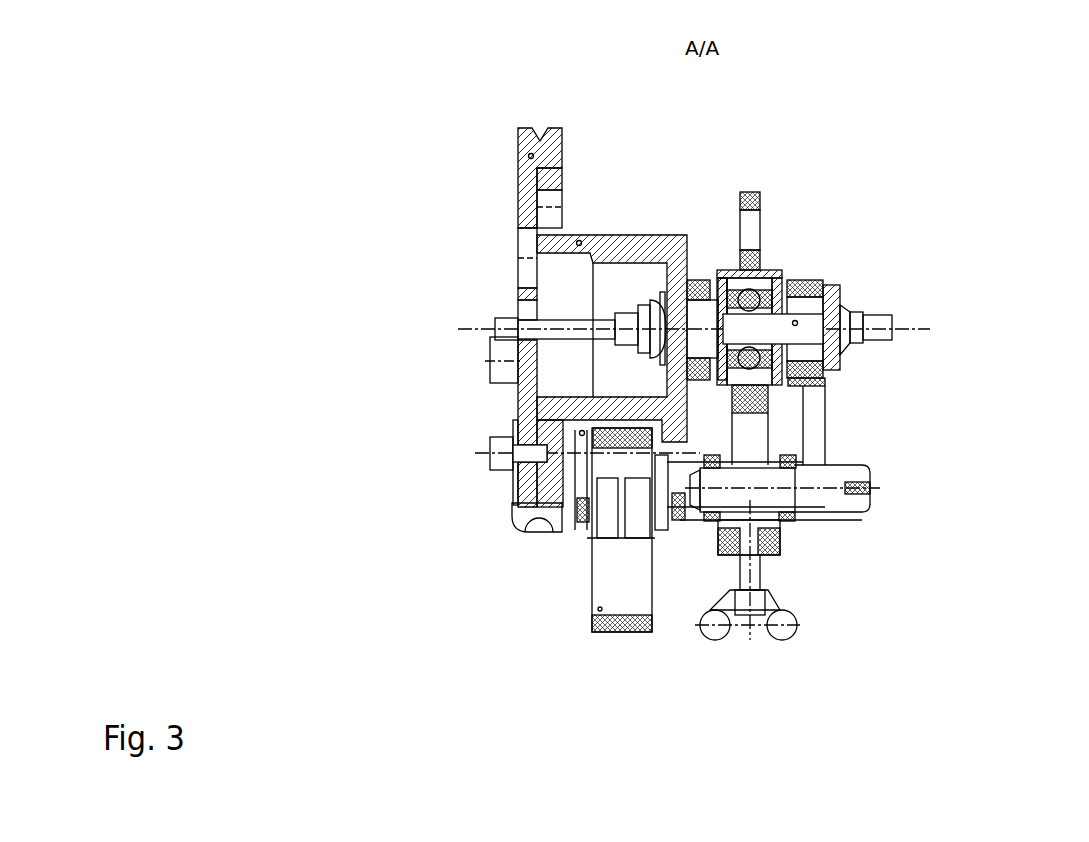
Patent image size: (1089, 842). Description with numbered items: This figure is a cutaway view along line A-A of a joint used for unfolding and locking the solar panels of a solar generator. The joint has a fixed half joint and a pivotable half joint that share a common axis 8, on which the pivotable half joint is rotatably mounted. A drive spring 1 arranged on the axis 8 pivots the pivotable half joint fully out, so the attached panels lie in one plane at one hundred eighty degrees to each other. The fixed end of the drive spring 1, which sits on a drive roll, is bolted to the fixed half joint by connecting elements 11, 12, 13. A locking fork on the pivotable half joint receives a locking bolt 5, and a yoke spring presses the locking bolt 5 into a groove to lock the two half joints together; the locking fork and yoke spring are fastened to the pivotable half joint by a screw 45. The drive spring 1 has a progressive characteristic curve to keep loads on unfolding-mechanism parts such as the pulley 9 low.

The drive spring 1 is at (608, 632).
The locking bolt 5 is at (817, 497).
The axis 8 is at (819, 283).
The pulley 9 is at (522, 130).
The connecting element 11 is at (582, 433).
The connecting element 12 is at (570, 515).
The connecting element 13 is at (587, 517).
The screw 45 is at (877, 340).